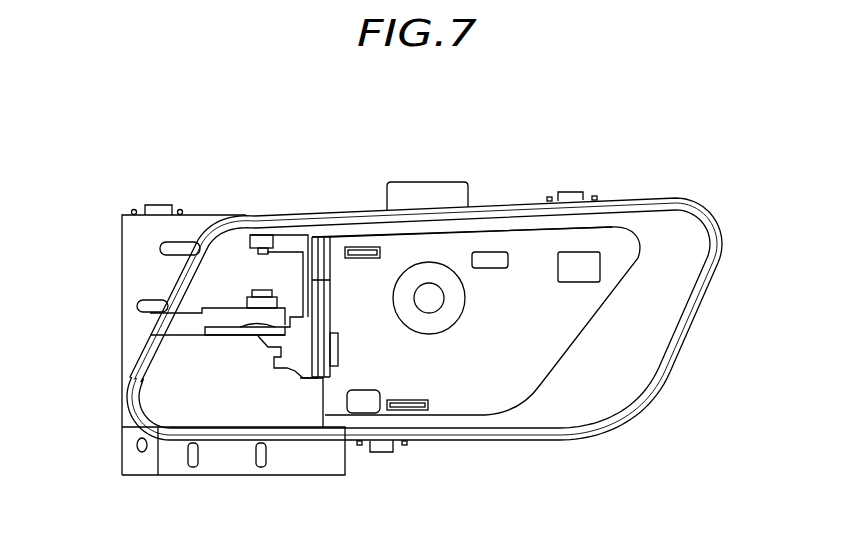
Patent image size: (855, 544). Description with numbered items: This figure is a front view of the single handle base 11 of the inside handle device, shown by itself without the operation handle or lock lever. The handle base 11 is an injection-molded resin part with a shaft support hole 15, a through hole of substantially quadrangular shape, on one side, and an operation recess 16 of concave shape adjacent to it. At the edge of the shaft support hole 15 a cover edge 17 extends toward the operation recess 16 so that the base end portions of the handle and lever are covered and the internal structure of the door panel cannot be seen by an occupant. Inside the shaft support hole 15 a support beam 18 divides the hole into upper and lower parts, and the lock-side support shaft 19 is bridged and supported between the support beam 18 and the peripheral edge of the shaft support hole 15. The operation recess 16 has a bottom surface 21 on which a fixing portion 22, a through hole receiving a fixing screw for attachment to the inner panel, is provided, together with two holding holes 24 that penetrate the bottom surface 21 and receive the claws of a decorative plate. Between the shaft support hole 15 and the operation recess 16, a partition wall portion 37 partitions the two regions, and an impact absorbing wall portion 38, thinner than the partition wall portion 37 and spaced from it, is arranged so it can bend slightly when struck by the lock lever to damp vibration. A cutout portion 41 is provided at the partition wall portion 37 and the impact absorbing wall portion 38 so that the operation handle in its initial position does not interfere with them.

The handle base 11 is at (648, 187).
The shaft support hole 15 is at (197, 407).
The operation recess 16 is at (495, 372).
The cover edge 17 is at (150, 328).
The support beam 18 is at (180, 337).
The lock-side support shaft 19 is at (263, 236).
The bottom surface 21 is at (427, 250).
The fixing portion 22 is at (430, 312).
The holding holes 24 is at (492, 258).
The partition wall portion 37 is at (328, 304).
The impact absorbing wall portion 38 is at (303, 278).
The cutout portion 41 is at (322, 410).